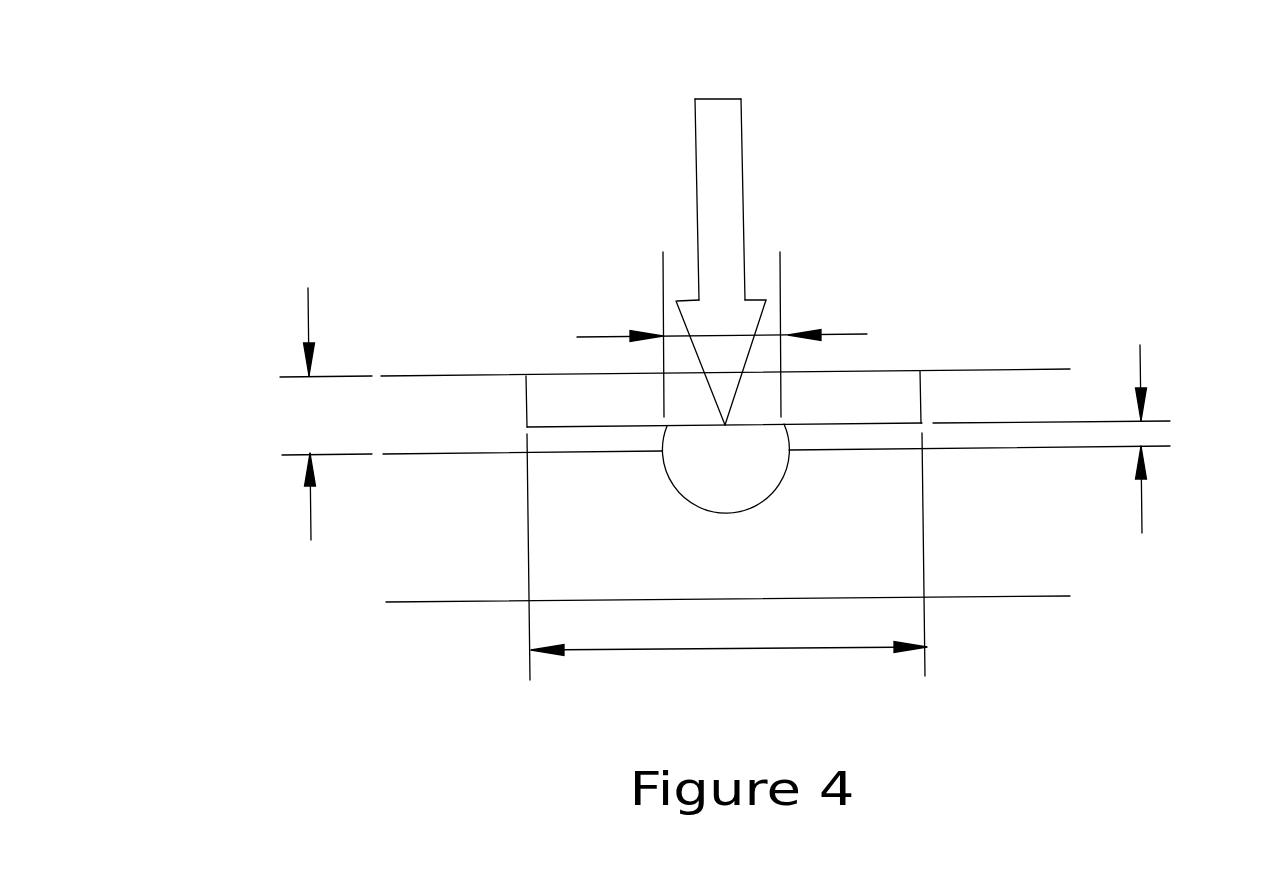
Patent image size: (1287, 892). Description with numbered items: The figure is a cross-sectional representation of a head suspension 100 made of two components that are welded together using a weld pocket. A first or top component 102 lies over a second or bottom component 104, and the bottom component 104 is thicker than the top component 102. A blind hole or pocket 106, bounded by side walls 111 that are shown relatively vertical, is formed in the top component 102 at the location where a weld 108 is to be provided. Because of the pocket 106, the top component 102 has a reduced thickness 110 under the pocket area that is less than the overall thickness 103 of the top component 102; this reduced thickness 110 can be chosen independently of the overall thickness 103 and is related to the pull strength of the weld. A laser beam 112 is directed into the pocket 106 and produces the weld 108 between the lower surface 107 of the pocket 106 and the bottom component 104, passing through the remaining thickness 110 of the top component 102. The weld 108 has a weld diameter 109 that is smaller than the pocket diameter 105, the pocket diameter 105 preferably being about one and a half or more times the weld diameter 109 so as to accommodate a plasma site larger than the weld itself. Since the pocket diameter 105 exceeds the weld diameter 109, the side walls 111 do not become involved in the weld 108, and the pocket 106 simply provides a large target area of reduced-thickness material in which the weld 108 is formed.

The head suspension 100 is at (285, 178).
The top component 102 is at (466, 390).
The overall thickness 103 is at (308, 414).
The bottom component 104 is at (398, 534).
The pocket diameter 105 is at (744, 650).
The pocket 106 is at (580, 396).
The lower surface 107 is at (857, 420).
The weld 108 is at (773, 492).
The weld diameter 109 is at (740, 345).
The thickness 110 is at (1140, 350).
The side walls 111 is at (920, 395).
The laser beam 112 is at (696, 191).